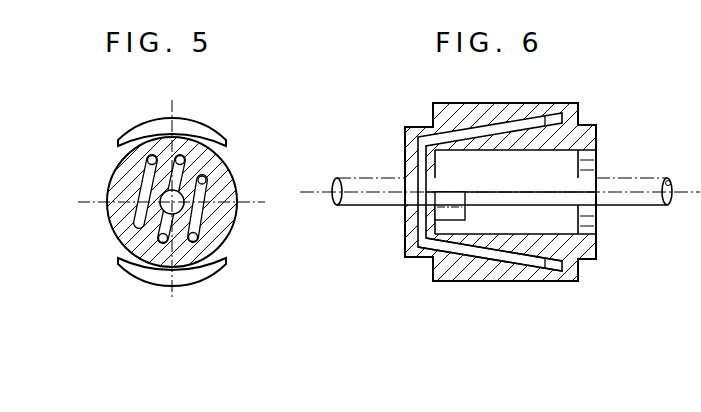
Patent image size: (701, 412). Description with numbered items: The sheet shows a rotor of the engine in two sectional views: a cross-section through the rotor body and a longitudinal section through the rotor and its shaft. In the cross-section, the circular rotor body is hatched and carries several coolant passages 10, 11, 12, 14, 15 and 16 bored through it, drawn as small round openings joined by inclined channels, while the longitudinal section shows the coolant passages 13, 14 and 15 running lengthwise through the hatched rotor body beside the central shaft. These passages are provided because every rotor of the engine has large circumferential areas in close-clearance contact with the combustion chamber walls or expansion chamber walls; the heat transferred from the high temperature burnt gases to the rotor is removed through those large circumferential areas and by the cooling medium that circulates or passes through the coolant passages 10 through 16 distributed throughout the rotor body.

In FIG. 5, the coolant passage 10 is at (142, 244).
In FIG. 5, the coolant passage 11 is at (203, 162).
In FIG. 5, the coolant passage 12 is at (190, 147).
In FIG. 6, the coolant passage 13 is at (553, 265).
In FIG. 5, the coolant passage 14 is at (146, 162).
In FIG. 6, the coolant passage 14 is at (517, 258).
In FIG. 5, the coolant passage 15 is at (140, 186).
In FIG. 6, the coolant passage 15 is at (418, 157).
In FIG. 5, the coolant passage 16 is at (207, 190).